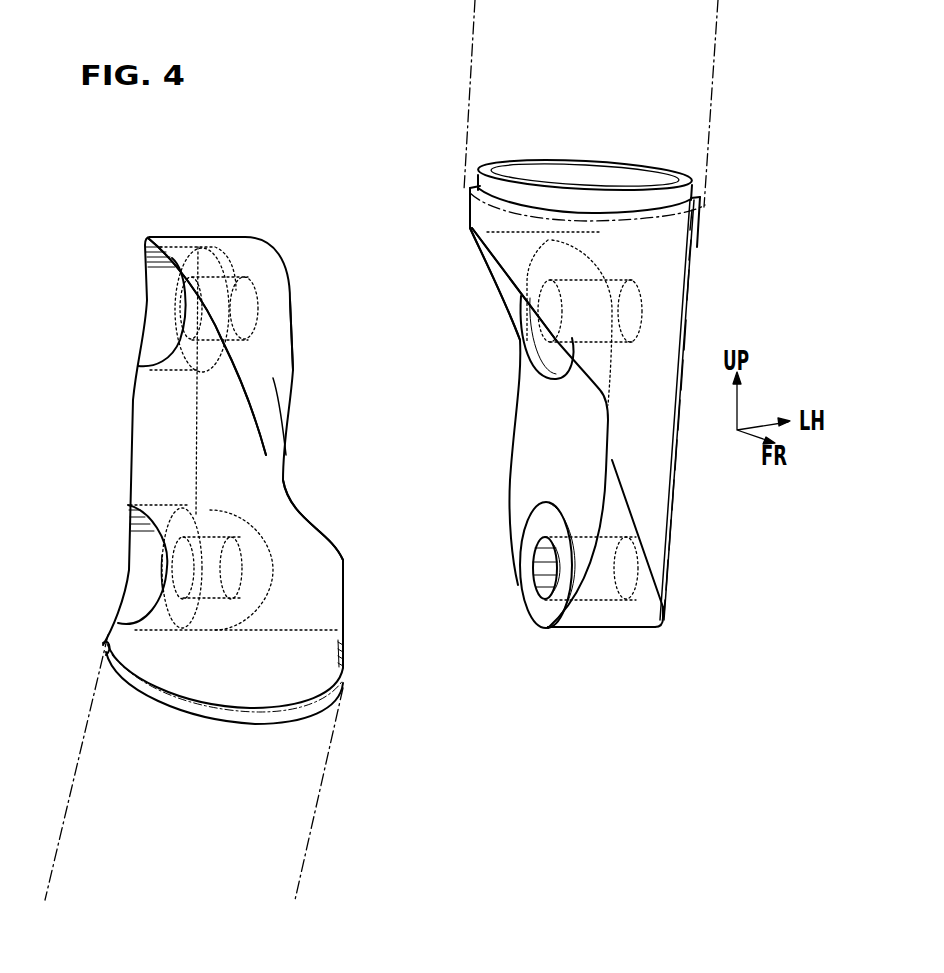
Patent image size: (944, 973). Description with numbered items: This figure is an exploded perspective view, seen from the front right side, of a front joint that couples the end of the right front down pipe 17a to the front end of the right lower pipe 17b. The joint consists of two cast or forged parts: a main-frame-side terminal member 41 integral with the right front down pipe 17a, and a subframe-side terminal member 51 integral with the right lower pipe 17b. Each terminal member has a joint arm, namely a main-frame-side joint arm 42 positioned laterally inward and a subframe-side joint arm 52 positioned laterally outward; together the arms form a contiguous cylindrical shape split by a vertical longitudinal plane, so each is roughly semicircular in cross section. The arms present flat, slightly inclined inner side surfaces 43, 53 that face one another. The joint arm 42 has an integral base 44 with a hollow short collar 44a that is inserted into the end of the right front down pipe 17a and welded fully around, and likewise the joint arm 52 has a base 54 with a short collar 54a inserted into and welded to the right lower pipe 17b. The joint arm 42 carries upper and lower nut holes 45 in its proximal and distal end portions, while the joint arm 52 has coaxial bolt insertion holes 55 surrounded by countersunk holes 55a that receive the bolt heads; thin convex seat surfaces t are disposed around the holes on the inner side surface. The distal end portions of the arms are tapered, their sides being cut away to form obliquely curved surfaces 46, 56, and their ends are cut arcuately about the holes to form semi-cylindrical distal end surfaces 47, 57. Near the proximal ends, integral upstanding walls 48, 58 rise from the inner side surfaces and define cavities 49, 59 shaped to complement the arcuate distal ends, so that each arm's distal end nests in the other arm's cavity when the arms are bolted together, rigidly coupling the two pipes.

The main-frame-side terminal member 41 is at (697, 246).
The main-frame-side joint arm 42 is at (663, 481).
The inner side surface 43 is at (528, 455).
The base 44 is at (477, 218).
The short collar 44a is at (485, 168).
The nut holes 45 is at (645, 300).
The obliquely curved surfaces 46 is at (628, 578).
The distal end surface 47 is at (608, 620).
The upstanding wall 48 is at (518, 255).
The cavity 49 is at (512, 292).
The convex seat surfaces t is at (548, 360).
The right front down pipe 17a is at (470, 100).
The right lower pipe 17b is at (86, 808).
The subframe-side terminal member 51 is at (133, 393).
The subframe-side joint arm 52 is at (145, 433).
The inner side surface 53 is at (266, 411).
The base 54 is at (128, 644).
The short collar 54a is at (137, 679).
The bolt insertion holes 55 is at (245, 297).
The countersunk holes 55a is at (152, 355).
The obliquely curved surfaces 56 is at (265, 340).
The distal end surface 57 is at (215, 242).
The upstanding wall 58 is at (320, 612).
The cavity 59 is at (295, 585).